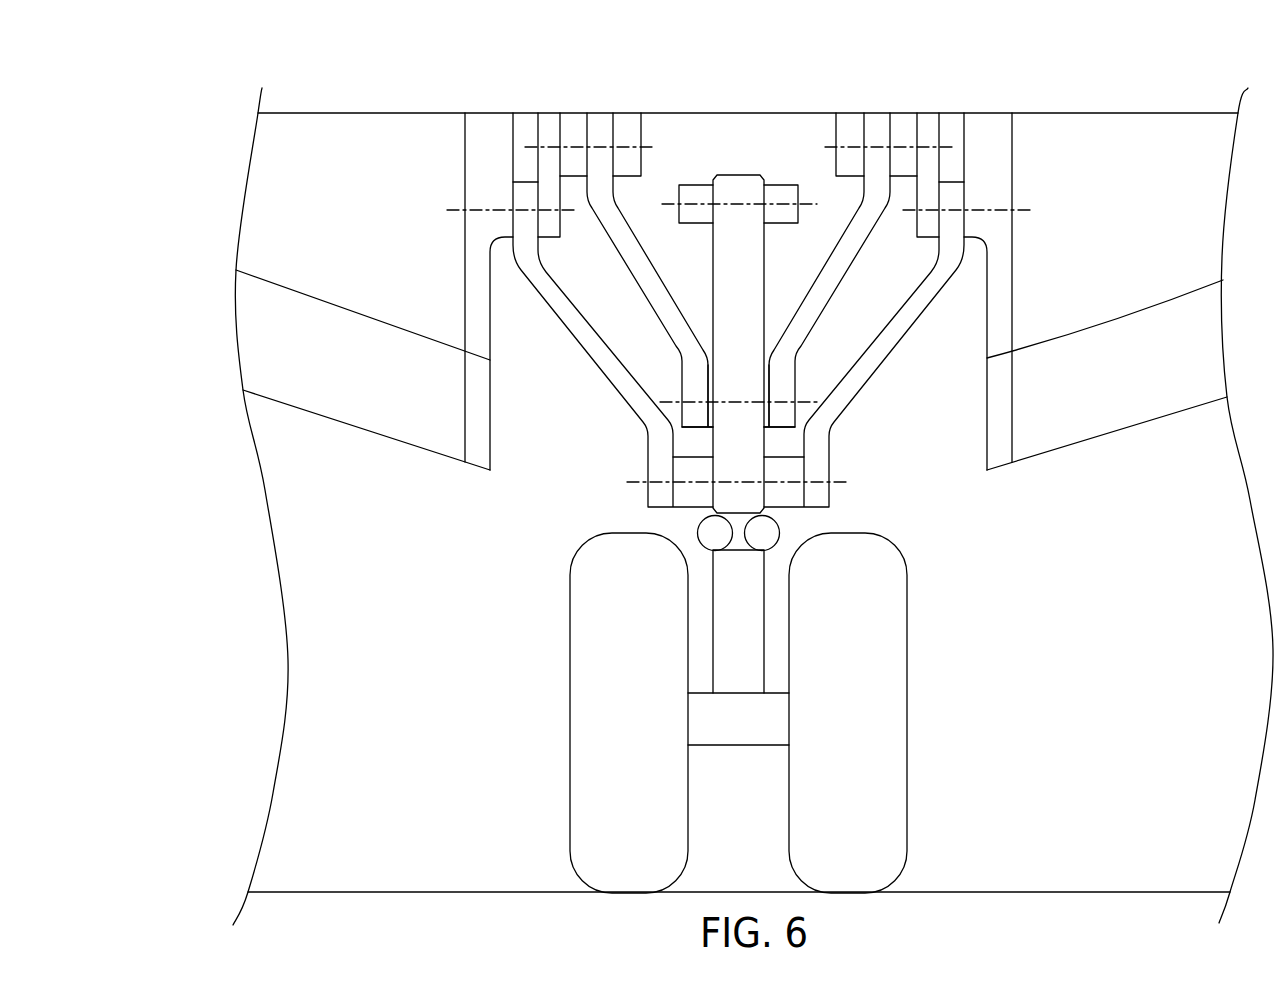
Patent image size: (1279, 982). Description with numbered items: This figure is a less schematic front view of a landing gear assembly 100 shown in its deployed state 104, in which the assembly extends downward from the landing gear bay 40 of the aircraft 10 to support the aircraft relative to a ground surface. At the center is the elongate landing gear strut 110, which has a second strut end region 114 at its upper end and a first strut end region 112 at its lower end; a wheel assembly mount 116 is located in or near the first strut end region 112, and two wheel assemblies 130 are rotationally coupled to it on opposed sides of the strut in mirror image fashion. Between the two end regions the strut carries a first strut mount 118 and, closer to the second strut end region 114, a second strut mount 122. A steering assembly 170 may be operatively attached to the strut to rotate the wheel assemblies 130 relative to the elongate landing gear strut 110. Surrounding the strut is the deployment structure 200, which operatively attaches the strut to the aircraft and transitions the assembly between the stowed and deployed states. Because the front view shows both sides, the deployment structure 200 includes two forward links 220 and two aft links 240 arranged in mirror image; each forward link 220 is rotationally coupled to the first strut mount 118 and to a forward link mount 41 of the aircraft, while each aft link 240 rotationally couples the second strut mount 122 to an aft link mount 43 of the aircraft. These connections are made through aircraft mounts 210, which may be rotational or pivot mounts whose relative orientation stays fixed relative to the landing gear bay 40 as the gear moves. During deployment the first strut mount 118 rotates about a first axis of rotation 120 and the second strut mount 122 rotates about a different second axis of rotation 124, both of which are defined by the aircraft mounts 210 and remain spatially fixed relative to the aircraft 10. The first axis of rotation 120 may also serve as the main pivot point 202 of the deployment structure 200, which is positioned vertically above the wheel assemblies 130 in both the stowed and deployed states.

The aircraft 10 is at (165, 79).
The landing gear bay 40 is at (462, 412).
The forward link mount 41 is at (551, 226).
The aft link mount 43 is at (623, 126).
The landing gear assembly 100 is at (964, 573).
The deployed state 104 is at (978, 702).
The elongate landing gear strut 110 is at (712, 564).
The first strut end region 112 is at (763, 773).
The second strut end region 114 is at (743, 159).
The wheel assembly mount 116 is at (715, 749).
The first strut mount 118 is at (688, 468).
The first axis of rotation 120 is at (497, 213).
The second strut mount 122 is at (709, 374).
The second axis of rotation 124 is at (577, 144).
The wheel assembly 130 is at (567, 752).
The steering assembly 170 is at (784, 525).
The deployment structure 200 is at (419, 287).
The main pivot point 202 is at (447, 212).
The aircraft mount 210 is at (569, 160).
The forward link 220 is at (544, 318).
The aft link 240 is at (629, 276).